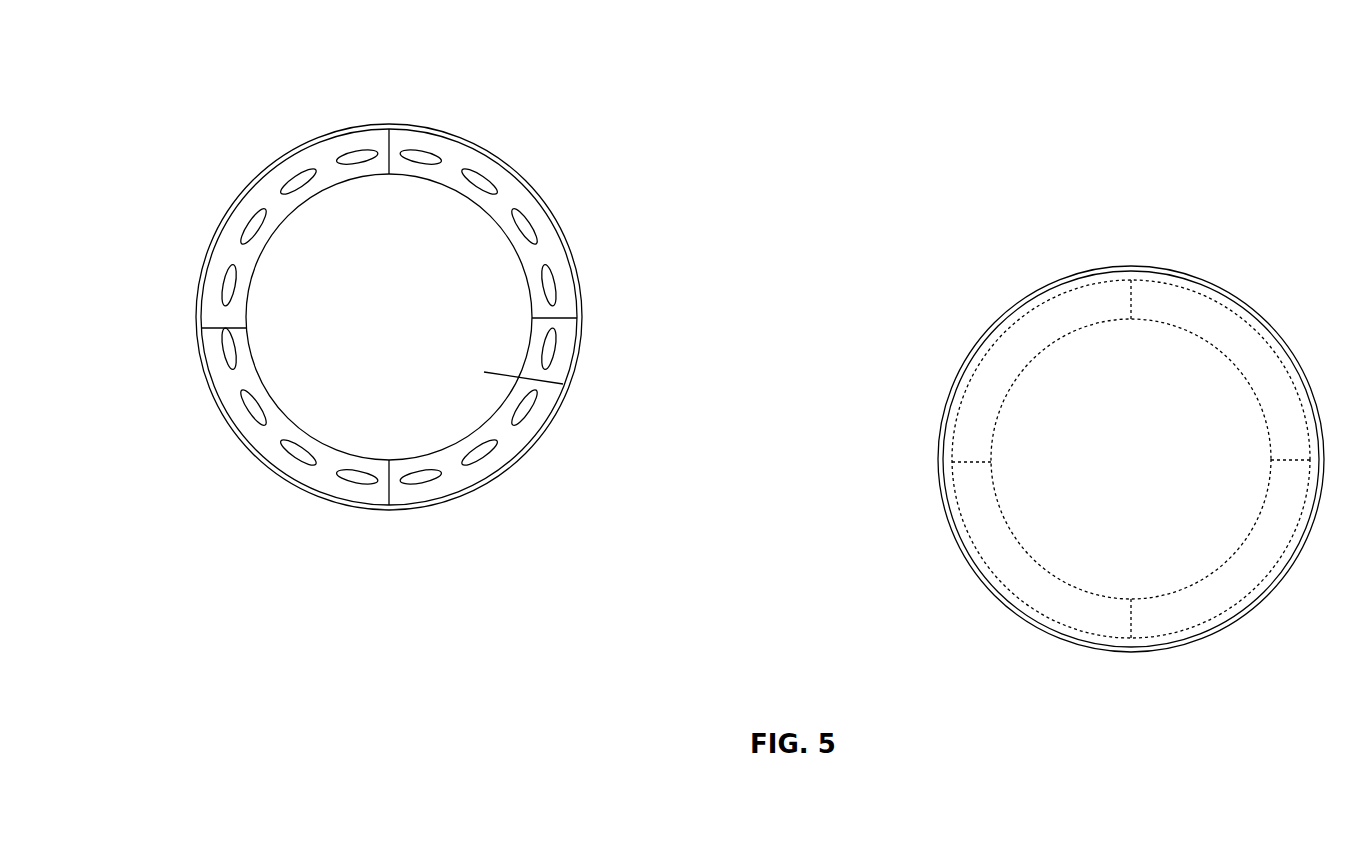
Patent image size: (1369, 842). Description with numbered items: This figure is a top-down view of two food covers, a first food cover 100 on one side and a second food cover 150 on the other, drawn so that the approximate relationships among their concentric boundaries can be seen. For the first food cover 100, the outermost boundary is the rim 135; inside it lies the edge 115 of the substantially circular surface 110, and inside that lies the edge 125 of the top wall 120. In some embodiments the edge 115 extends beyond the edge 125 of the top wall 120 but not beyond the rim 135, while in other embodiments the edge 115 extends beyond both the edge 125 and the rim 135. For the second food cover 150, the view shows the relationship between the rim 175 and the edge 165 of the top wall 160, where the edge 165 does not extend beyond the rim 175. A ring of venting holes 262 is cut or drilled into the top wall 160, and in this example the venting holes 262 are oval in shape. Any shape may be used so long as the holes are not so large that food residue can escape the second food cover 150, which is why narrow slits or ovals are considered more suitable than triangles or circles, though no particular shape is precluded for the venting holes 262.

The second food cover 150 is at (261, 119).
The venting holes 262 is at (360, 150).
The top wall 160 is at (406, 324).
The edge of the top wall 165 is at (484, 372).
The rim 175 is at (540, 433).
The first food cover 100 is at (914, 304).
The edge of the top wall 125 is at (1010, 330).
The edge of the substantially circular surface 115 is at (953, 412).
The substantially circular surface 110 is at (1148, 454).
The top wall 120 is at (1232, 555).
The rim 135 is at (1258, 603).